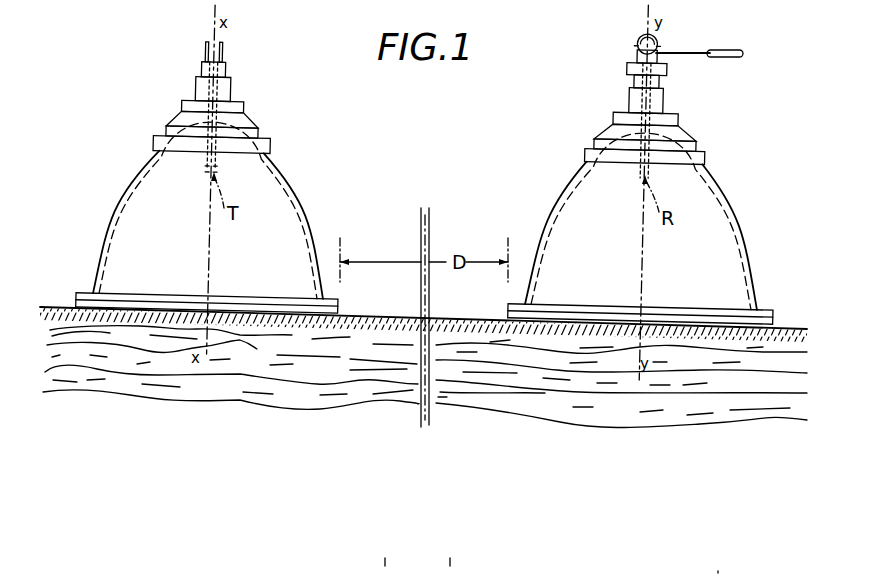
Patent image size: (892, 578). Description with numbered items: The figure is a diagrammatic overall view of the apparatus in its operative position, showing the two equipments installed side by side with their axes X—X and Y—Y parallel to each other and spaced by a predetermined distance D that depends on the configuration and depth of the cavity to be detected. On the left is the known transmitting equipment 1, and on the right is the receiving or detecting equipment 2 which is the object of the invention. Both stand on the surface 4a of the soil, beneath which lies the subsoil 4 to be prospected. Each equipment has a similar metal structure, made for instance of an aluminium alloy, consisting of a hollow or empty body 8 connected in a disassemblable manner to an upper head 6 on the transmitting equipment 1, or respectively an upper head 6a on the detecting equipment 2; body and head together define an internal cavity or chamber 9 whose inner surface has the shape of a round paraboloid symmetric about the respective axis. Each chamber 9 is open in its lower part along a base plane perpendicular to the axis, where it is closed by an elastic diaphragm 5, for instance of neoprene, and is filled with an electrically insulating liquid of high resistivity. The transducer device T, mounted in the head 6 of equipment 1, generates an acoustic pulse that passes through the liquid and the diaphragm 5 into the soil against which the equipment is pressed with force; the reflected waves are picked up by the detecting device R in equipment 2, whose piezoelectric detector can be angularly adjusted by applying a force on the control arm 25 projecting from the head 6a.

The transmitting equipment 1 is at (315, 212).
The receiving or detecting equipment 2 is at (740, 195).
The subsoil 4 is at (368, 354).
The surface of the soil 4a is at (63, 305).
The elastic diaphragm 5 is at (157, 308).
The upper head 6 is at (170, 120).
The upper head 6a is at (603, 132).
The hollow body 8 is at (285, 170).
The cavity or chamber 9 is at (254, 273).
The control arm 25 is at (677, 52).